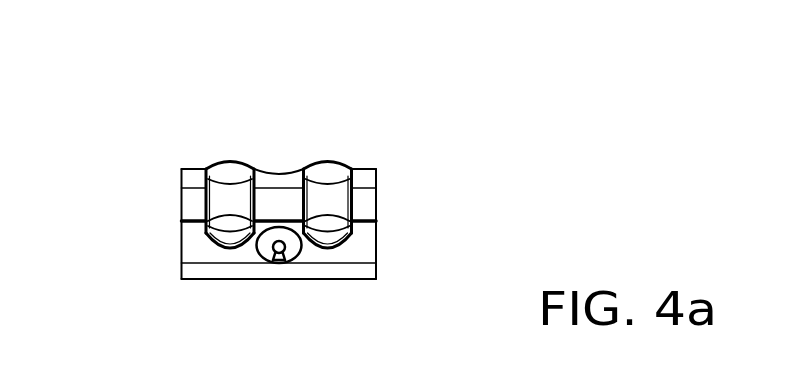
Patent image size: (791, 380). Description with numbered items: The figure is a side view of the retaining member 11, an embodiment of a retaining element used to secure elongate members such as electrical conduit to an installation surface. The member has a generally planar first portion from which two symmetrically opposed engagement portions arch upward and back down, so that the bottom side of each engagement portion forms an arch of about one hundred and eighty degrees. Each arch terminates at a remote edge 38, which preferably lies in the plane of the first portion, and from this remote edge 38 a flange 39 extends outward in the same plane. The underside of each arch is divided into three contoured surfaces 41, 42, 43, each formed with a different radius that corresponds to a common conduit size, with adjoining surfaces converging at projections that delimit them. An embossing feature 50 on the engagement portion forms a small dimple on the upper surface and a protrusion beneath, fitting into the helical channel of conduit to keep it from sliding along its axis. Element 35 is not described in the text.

The retaining member 11 is at (290, 100).
The cylindrical cable channels 35 is at (231, 158).
The remote edge 38 is at (182, 255).
The flange 39 is at (376, 270).
The center contoured surface 41 is at (376, 240).
The intermediate contoured surface 42 is at (376, 206).
The apex contoured surface 43 is at (376, 170).
The embossing feature 50 is at (267, 249).